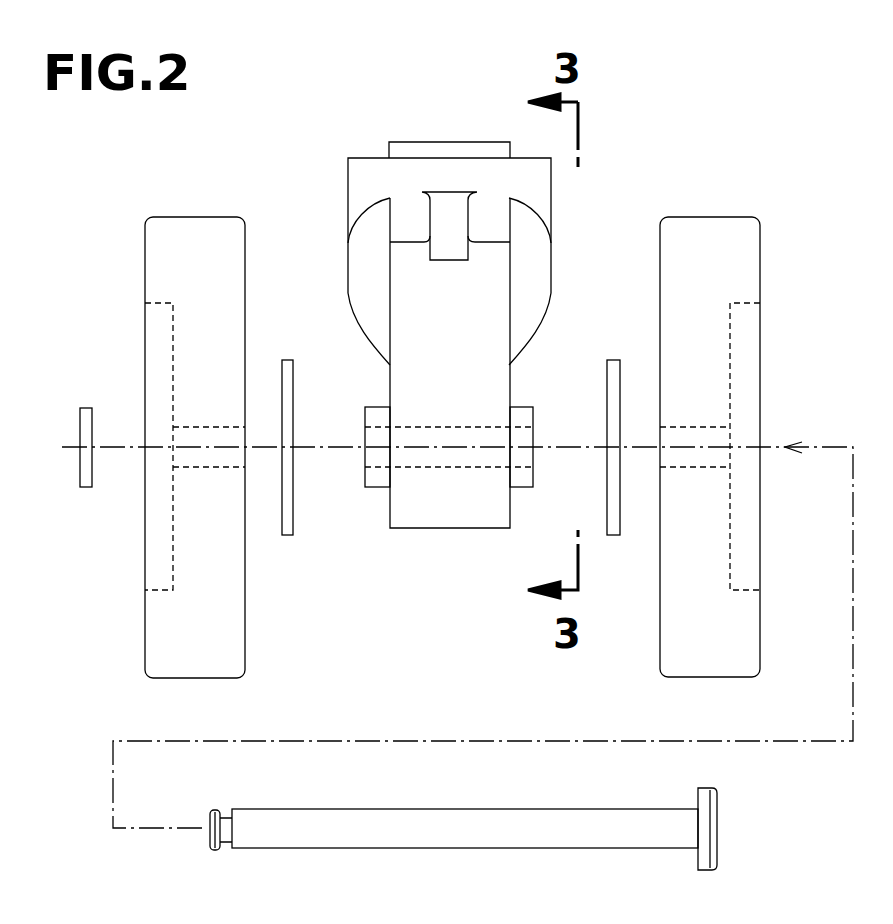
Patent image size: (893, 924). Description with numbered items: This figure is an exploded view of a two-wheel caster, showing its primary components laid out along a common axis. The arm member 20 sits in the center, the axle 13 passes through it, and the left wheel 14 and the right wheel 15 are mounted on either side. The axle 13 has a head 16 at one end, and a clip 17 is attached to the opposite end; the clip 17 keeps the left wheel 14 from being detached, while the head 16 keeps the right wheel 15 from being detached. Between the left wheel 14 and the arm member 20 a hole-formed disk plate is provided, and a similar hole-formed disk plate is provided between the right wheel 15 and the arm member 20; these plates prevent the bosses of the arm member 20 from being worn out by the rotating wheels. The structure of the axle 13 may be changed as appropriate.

The axle 13 is at (436, 837).
The left wheel 14 is at (195, 214).
The right wheel 15 is at (710, 214).
The head 16 is at (705, 830).
The clip 17 is at (90, 487).
The arm member 20 is at (331, 192).